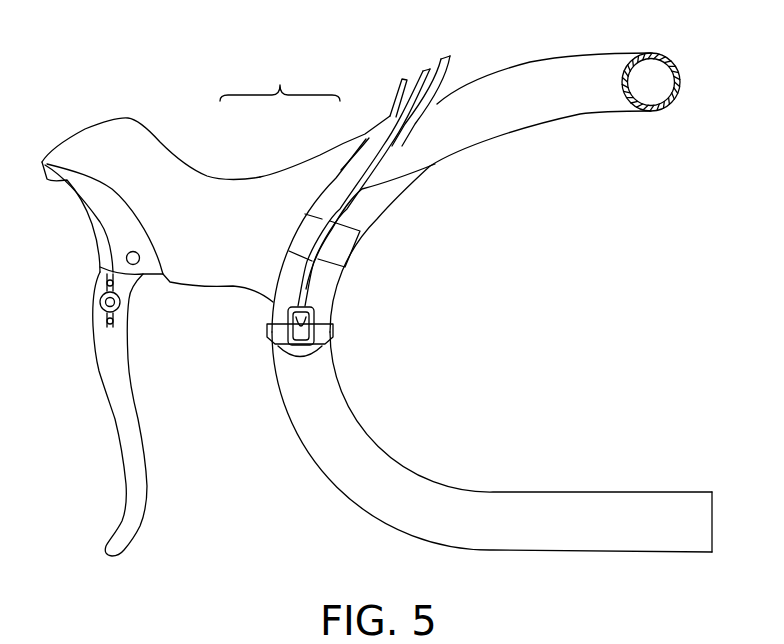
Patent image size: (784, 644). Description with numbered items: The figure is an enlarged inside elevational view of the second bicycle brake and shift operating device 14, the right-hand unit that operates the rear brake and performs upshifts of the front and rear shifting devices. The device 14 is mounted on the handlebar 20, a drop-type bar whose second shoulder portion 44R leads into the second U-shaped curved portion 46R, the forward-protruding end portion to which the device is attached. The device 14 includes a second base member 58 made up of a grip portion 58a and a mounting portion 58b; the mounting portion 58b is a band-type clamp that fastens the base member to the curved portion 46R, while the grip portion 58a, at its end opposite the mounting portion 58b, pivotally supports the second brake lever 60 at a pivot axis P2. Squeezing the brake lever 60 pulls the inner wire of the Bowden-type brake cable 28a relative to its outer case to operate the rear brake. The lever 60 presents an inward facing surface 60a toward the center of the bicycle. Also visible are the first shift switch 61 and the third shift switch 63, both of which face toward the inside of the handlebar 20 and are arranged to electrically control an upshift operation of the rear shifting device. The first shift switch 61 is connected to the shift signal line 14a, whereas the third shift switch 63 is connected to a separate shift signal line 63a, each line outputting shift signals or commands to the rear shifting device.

The second bicycle brake and shift operating device 14 is at (80, 106).
The shift signal line 14a is at (427, 80).
The handlebar 20 is at (553, 129).
The brake cable 28a is at (392, 103).
The second shoulder portion 44R is at (679, 73).
The second U-shaped curved portion 46R is at (393, 458).
The second base member 58 is at (325, 179).
The grip portion 58a is at (260, 176).
The mounting portion 58b is at (323, 212).
The second brake lever 60 is at (89, 414).
The inward facing surface 60a is at (118, 378).
The first shift switch 61 is at (100, 305).
The third shift switch 63 is at (312, 333).
The shift signal line 63a is at (363, 188).
The pivot axis P2 is at (126, 259).